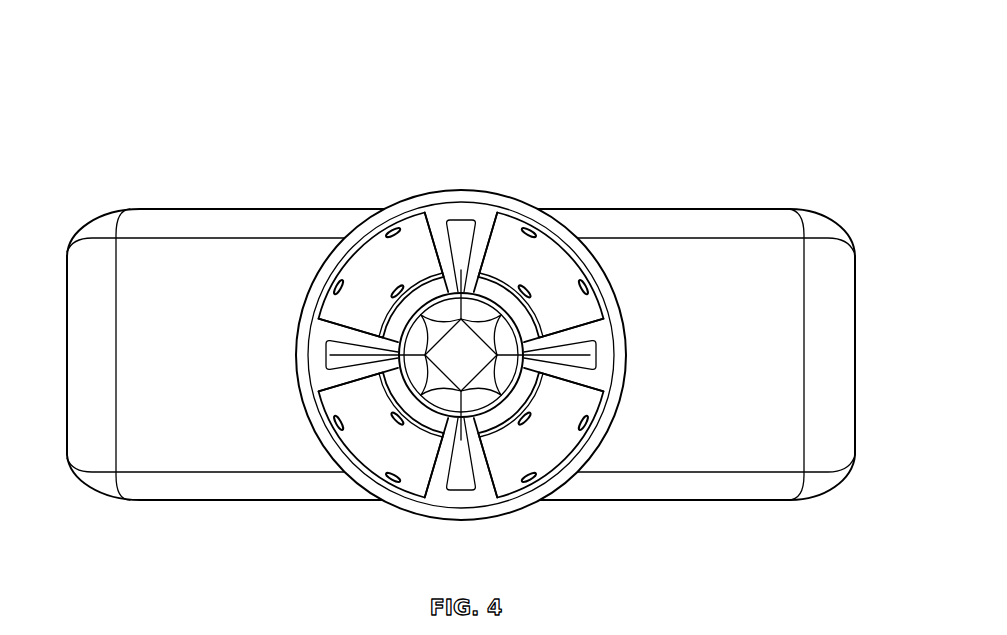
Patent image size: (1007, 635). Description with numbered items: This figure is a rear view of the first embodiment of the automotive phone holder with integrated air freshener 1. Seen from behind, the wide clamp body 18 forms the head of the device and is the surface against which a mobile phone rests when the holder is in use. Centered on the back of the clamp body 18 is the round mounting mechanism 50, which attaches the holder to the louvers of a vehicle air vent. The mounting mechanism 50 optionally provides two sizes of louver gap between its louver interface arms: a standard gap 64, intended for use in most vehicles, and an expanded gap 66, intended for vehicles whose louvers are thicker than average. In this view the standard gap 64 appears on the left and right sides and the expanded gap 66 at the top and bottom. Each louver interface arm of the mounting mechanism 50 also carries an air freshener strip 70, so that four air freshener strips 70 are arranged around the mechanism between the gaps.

The automotive phone holder with integrated air freshener 1 is at (697, 152).
The clamp body 18 is at (197, 342).
The mounting mechanism 50 is at (632, 153).
The standard gap 64 is at (592, 357).
The expanded gap 66 is at (459, 232).
The air freshener strip 70 is at (373, 275).